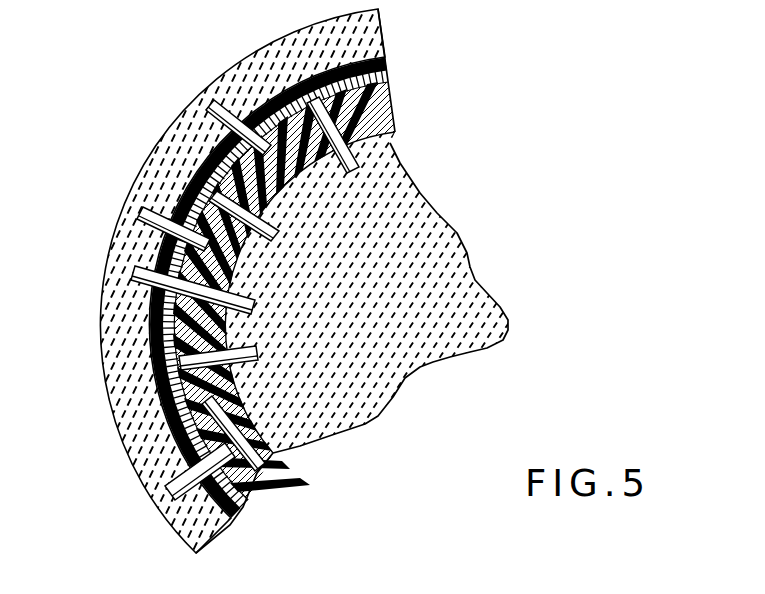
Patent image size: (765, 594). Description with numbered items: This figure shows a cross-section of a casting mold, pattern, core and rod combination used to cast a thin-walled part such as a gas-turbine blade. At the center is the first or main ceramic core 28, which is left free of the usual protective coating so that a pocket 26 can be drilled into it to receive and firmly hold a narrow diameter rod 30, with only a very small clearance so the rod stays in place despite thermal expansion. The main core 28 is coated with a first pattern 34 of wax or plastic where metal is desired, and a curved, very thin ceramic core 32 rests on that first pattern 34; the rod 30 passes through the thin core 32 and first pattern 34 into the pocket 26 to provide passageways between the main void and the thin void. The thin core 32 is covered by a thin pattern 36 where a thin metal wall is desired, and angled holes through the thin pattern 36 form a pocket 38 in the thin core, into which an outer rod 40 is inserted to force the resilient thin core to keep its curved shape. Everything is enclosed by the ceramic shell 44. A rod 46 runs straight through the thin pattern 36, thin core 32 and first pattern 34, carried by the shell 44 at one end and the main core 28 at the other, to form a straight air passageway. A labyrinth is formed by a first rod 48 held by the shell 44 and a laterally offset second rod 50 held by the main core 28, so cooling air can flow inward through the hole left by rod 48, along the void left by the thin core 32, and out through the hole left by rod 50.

The pocket 26 is at (343, 172).
The ceramic core 28 is at (400, 363).
The narrow diameter rod 30 is at (363, 143).
The thin ceramic core 32 is at (378, 90).
The first pattern 34 is at (388, 130).
The thin pattern 36 is at (370, 68).
The pocket 38 is at (217, 107).
The outer rod 40 is at (210, 110).
The ceramic shell 44 is at (360, 35).
The rod 46 is at (135, 283).
The first rod 48 is at (148, 203).
The second rod 50 is at (285, 245).